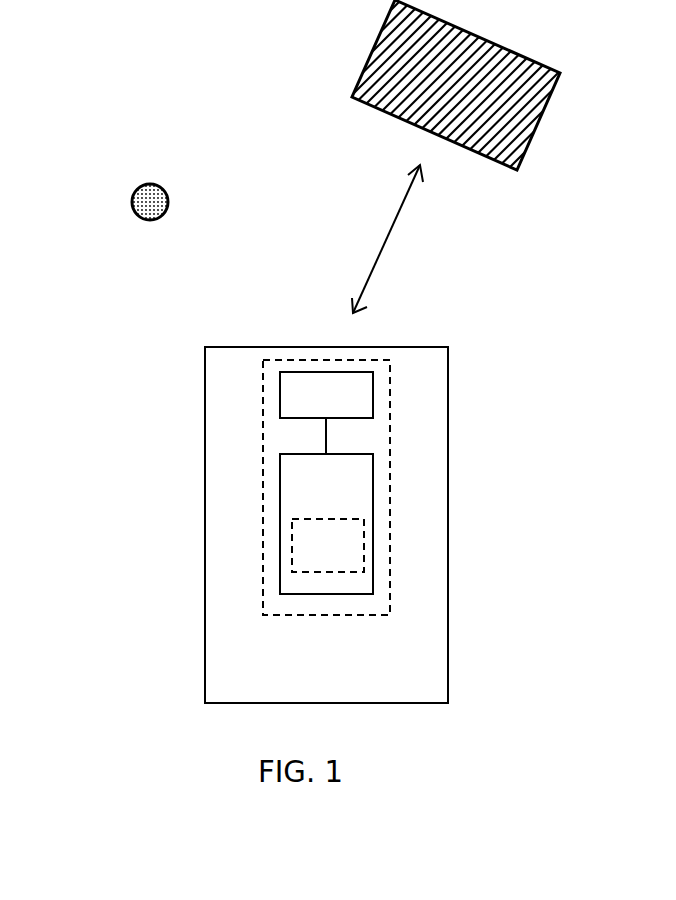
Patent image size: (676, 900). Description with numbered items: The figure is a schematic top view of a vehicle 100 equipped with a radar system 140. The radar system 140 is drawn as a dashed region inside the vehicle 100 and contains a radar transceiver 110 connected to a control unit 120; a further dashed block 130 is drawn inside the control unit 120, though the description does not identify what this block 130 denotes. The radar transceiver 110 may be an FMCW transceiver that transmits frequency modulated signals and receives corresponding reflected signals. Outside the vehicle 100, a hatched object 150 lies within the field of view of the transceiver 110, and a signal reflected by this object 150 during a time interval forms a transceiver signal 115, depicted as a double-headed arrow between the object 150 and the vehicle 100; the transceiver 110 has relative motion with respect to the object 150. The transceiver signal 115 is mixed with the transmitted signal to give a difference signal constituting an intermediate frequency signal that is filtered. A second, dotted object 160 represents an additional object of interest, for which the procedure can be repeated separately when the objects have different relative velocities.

The vehicle 100 is at (305, 671).
The radar transceiver 110 is at (307, 408).
The transceiver signal 115 is at (384, 239).
The control unit 120 is at (307, 490).
The secure element 130 is at (309, 556).
The radar system 140 is at (263, 413).
The object 150 is at (374, 42).
The object of interest 160 is at (142, 185).